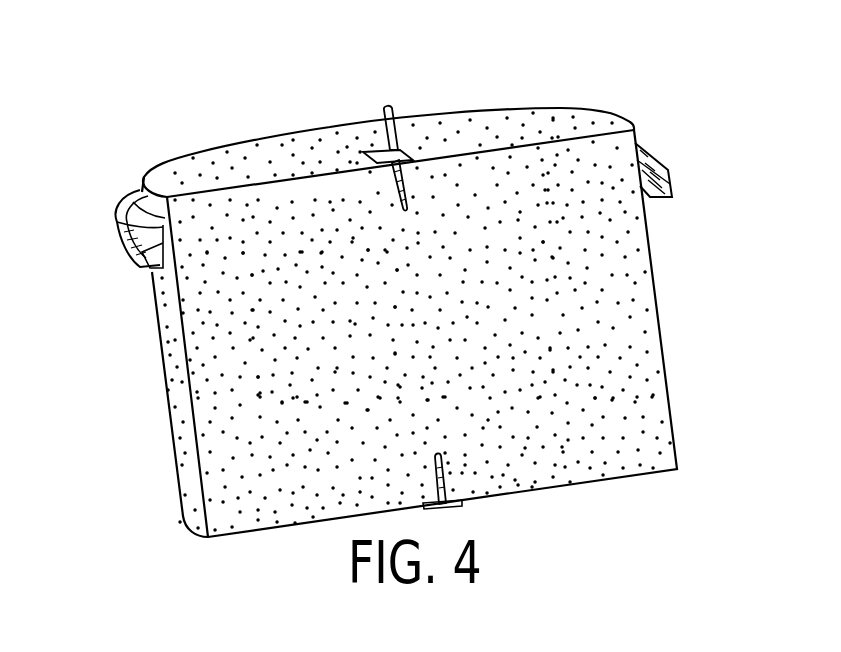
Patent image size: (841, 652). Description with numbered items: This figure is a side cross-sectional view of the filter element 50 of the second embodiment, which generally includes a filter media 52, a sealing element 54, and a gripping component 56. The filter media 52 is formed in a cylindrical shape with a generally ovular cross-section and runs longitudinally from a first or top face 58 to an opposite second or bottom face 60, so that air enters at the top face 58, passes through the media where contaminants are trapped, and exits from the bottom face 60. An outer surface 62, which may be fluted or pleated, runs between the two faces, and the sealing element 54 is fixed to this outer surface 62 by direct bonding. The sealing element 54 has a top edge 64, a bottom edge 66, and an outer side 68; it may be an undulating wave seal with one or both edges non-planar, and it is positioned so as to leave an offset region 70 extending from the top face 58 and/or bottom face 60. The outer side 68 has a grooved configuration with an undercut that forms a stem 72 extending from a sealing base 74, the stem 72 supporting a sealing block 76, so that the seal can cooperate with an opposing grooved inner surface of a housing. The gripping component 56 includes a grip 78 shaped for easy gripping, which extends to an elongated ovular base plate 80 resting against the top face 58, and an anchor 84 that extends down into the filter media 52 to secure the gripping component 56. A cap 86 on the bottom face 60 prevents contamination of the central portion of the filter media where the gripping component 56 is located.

The filter element 50 is at (661, 80).
The filter media 52 is at (170, 115).
The sealing element 54 is at (100, 260).
The gripping component 56 is at (428, 82).
The top face 58 is at (272, 148).
The bottom face 60 is at (622, 479).
The outer surface 62 is at (167, 382).
The top edge 64 is at (650, 160).
The bottom edge 66 is at (658, 198).
The outer side 68 is at (668, 185).
The offset region 70 is at (140, 191).
The stem 72 is at (163, 258).
The sealing base 74 is at (133, 215).
The sealing block 76 is at (117, 219).
The grip 78 is at (388, 107).
The base plate 80 is at (370, 147).
The anchor 84 is at (404, 190).
The cap 86 is at (443, 505).